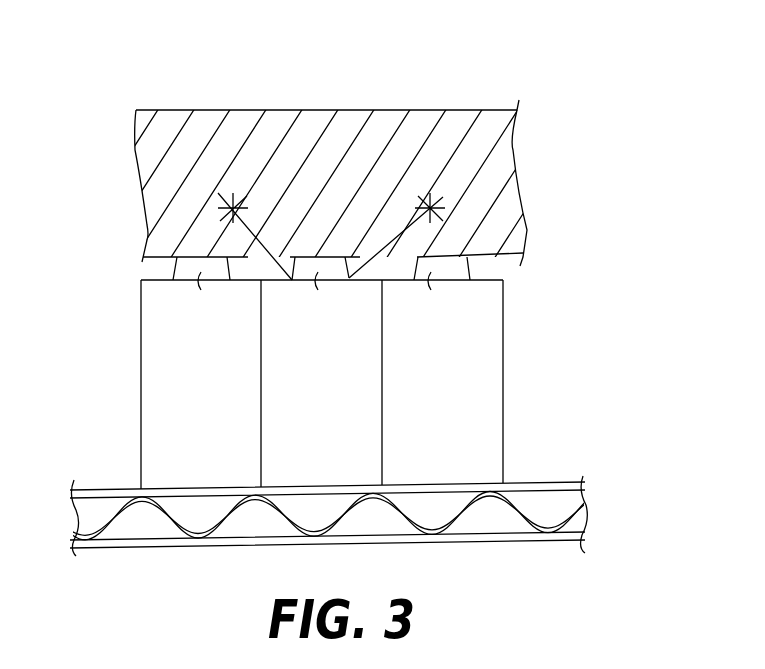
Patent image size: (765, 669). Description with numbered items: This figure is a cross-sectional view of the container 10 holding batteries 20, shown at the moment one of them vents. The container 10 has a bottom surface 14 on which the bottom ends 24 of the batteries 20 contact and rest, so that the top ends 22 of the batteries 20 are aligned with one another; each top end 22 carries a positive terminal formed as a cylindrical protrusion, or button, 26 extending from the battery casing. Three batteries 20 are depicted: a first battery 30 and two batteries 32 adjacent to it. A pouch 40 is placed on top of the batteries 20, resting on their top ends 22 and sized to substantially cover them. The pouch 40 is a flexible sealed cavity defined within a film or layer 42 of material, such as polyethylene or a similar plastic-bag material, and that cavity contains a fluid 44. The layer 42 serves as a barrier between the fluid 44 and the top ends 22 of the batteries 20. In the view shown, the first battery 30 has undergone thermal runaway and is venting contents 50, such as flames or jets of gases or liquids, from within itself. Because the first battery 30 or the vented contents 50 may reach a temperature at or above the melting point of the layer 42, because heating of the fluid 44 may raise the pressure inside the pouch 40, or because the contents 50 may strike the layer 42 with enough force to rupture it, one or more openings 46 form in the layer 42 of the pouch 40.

The container 10 is at (605, 150).
The bottom surface 14 is at (552, 541).
The batteries 20 is at (562, 307).
The top end 22 is at (142, 280).
The bottom end 24 is at (242, 483).
The cylindrical protrusion (button) 26 is at (198, 281).
The first battery 30 is at (355, 423).
The batteries adjacent to the first battery 32 is at (141, 380).
The pouch 40 is at (426, 78).
The layer 42 is at (140, 108).
The fluid 44 is at (200, 130).
The openings 46 is at (273, 253).
The vented contents 50 is at (400, 236).